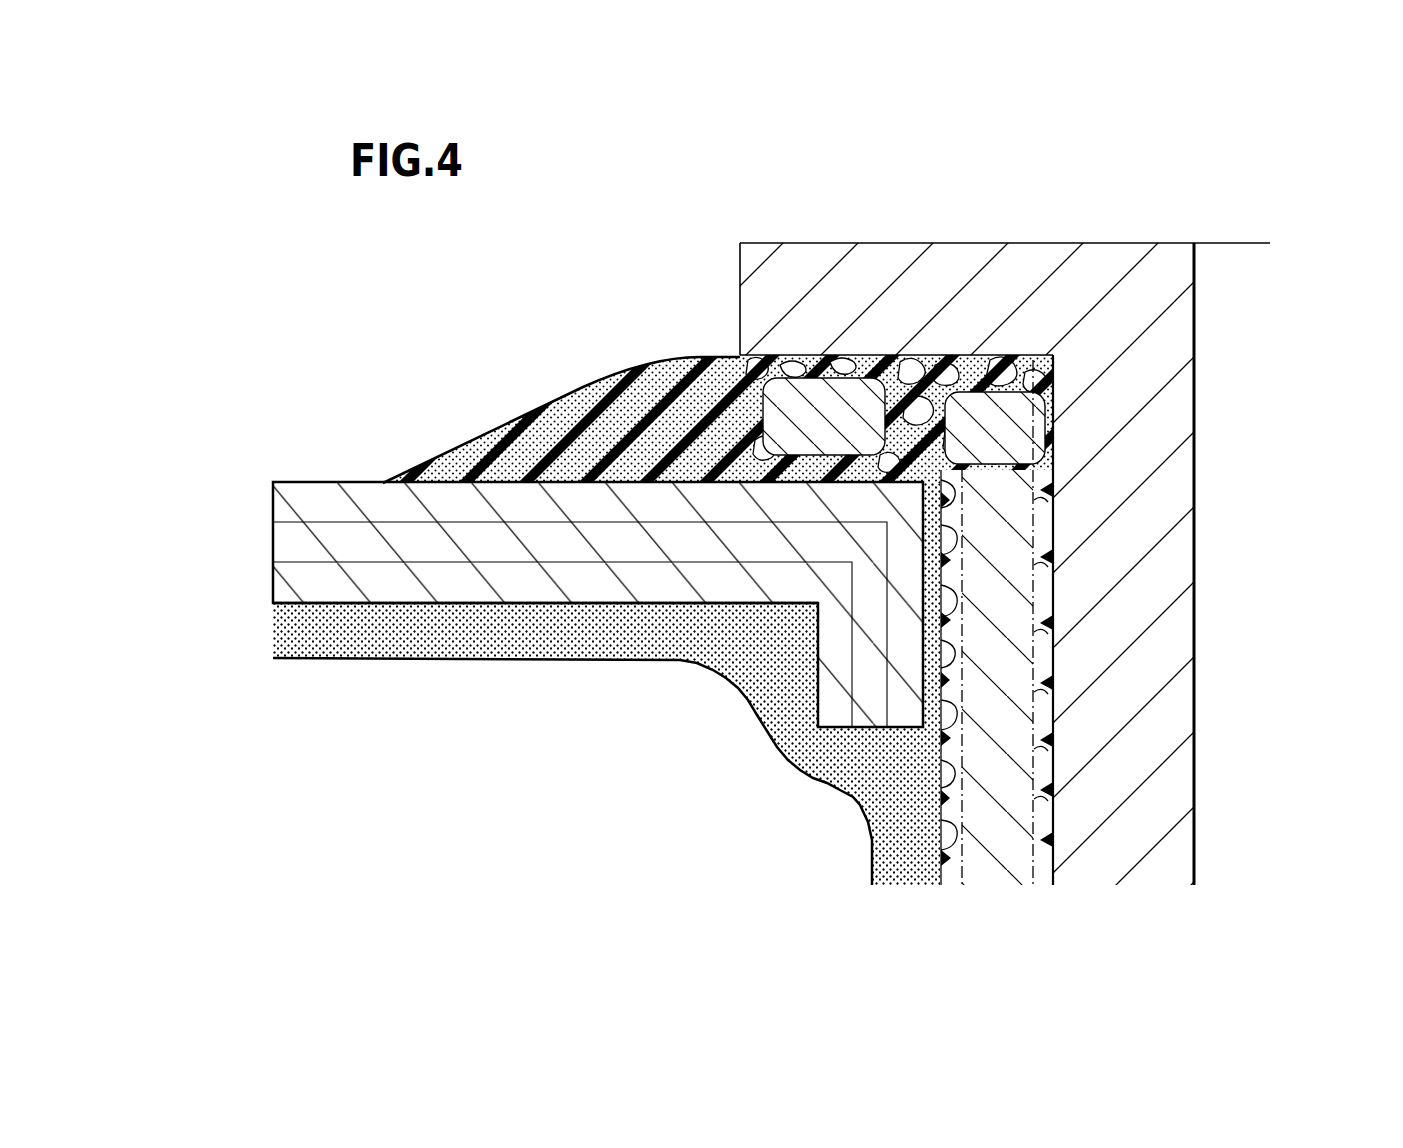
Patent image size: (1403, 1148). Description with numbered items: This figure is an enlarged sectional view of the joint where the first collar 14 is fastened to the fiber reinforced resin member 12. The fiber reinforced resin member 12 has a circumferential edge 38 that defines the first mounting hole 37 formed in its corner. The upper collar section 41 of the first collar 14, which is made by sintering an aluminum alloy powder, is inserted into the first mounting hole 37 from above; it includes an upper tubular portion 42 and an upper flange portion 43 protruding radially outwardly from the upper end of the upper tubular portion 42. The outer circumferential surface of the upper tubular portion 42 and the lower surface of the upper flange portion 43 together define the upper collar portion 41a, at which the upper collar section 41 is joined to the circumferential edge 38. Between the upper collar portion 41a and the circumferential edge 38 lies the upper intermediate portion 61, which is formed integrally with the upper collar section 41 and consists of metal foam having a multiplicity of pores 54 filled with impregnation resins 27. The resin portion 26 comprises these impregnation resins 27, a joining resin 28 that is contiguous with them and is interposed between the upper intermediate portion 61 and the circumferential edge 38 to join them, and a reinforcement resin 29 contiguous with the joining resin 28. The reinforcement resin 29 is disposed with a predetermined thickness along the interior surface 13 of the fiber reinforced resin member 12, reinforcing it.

The fiber reinforced resin member 12 is at (310, 478).
The interior surface 13 is at (607, 648).
The first collar 14 is at (1152, 208).
The resin portion 26 is at (512, 410).
The impregnation resins 27 is at (800, 368).
The joining resin 28 is at (690, 420).
The reinforcement resin 29 is at (508, 645).
The first mounting hole 37 is at (942, 518).
The circumferential edge 38 is at (867, 607).
The upper collar section 41 is at (1200, 382).
The upper collar portion 41a is at (1057, 478).
The upper tubular portion 42 is at (1183, 568).
The upper flange portion 43 is at (935, 252).
The pores 54 is at (822, 368).
The upper intermediate portion 61 is at (1063, 522).